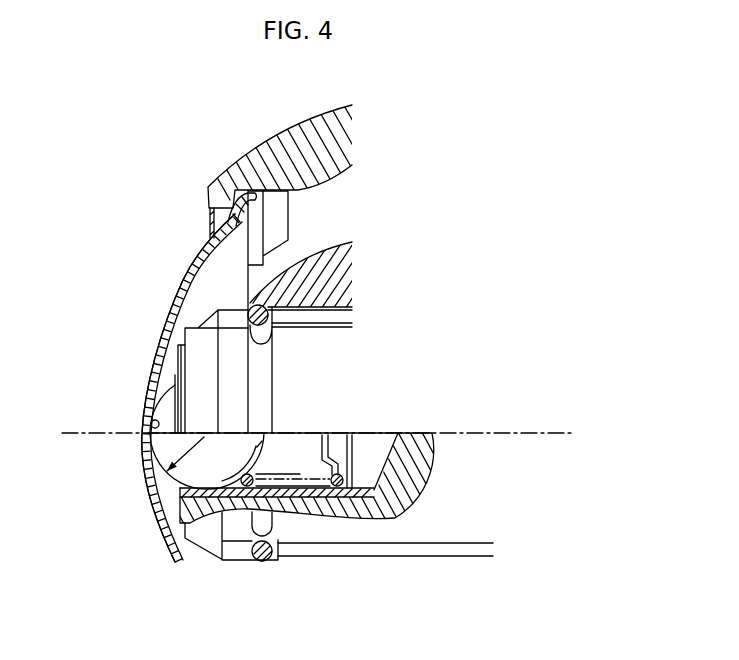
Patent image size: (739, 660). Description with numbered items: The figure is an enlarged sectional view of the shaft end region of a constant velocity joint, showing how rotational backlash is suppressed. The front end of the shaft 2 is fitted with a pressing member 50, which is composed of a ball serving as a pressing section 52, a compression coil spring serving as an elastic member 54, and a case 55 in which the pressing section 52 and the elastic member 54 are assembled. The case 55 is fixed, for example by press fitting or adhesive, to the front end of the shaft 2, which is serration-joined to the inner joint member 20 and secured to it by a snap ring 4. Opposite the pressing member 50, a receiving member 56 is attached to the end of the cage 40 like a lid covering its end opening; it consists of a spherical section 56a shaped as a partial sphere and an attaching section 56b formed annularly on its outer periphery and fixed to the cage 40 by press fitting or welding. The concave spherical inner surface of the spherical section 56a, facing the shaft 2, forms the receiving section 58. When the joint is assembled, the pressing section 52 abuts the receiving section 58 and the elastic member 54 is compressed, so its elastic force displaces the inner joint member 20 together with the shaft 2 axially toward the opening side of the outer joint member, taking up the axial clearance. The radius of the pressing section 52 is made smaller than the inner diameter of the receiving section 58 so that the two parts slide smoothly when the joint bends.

The shaft 2 is at (420, 530).
The snap ring 4 is at (262, 563).
The inner joint member 20 is at (347, 272).
The cage 40 is at (275, 130).
The pressing member 50 is at (163, 498).
The pressing section 52 is at (168, 472).
The elastic member 54 is at (293, 470).
The case 55 is at (310, 518).
The receiving member 56 is at (140, 382).
The spherical section 56a is at (157, 357).
The attaching section 56b is at (237, 182).
The receiving section 58 is at (148, 418).